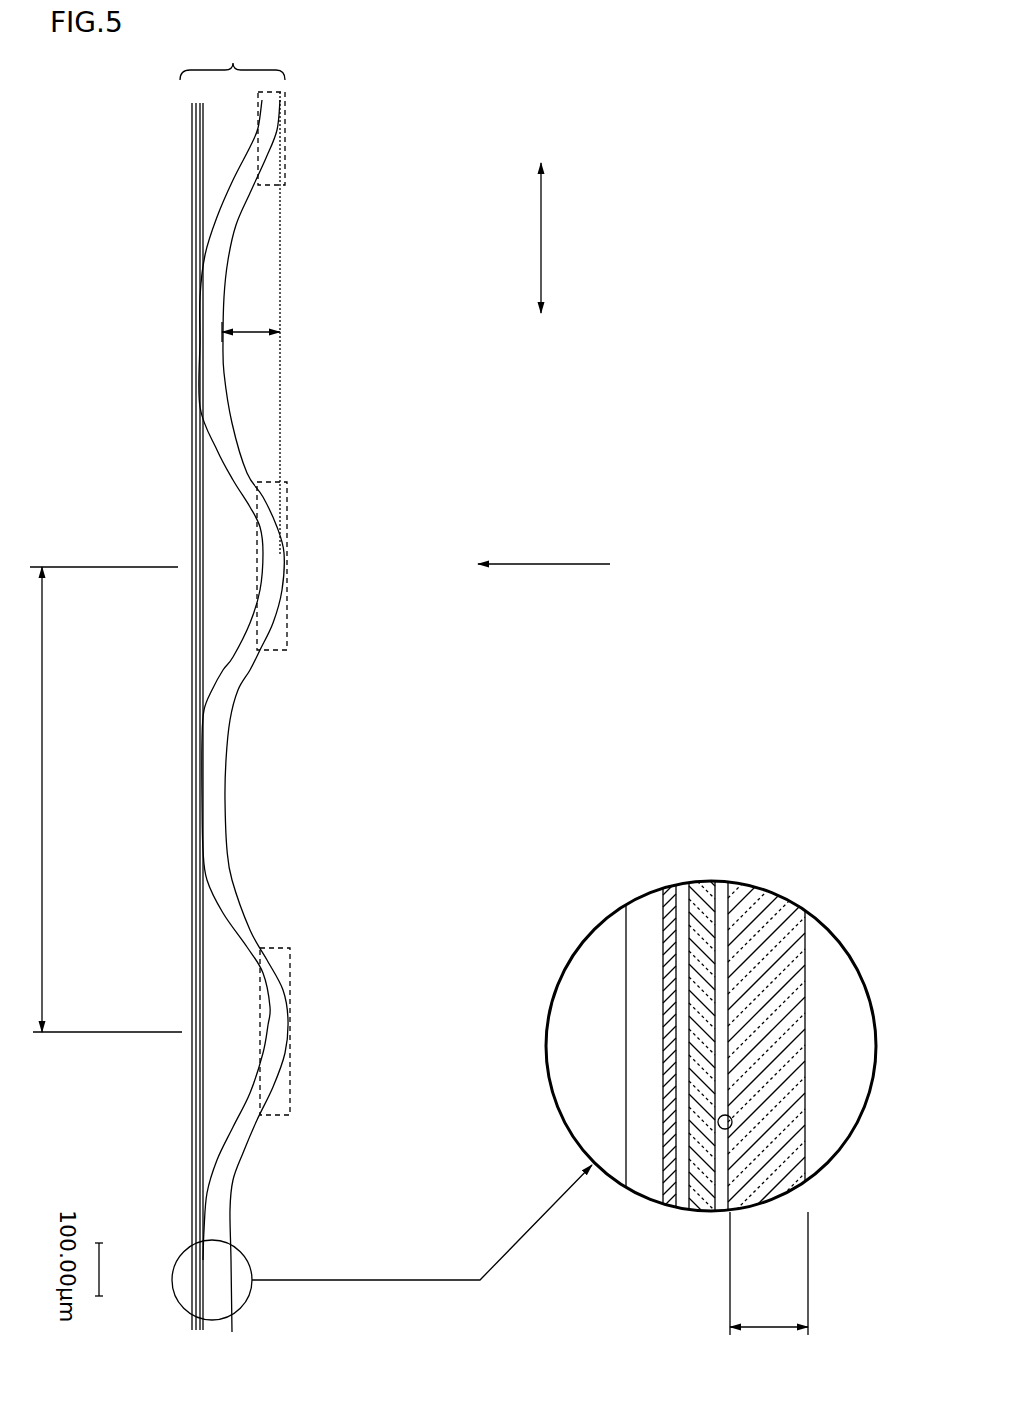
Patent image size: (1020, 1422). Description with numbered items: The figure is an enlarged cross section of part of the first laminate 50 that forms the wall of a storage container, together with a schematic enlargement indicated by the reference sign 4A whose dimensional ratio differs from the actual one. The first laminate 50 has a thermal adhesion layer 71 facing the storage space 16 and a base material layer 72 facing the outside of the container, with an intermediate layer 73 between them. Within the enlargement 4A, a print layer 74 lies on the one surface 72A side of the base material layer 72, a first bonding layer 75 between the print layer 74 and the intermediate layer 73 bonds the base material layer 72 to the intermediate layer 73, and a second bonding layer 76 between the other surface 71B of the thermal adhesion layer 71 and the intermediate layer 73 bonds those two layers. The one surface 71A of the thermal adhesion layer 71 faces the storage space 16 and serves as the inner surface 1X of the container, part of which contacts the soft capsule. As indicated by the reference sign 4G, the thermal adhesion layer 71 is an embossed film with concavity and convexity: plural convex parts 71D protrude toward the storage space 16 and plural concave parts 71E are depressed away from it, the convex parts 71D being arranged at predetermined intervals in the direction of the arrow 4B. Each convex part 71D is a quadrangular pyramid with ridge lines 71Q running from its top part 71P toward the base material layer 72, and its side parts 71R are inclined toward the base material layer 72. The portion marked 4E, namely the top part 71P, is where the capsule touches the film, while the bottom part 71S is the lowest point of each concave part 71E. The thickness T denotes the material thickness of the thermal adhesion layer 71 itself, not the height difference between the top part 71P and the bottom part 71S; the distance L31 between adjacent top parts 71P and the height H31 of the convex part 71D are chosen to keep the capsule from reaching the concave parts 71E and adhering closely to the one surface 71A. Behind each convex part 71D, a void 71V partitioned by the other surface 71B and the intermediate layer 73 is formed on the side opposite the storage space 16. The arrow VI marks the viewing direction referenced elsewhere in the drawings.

The first laminate 50 is at (232, 58).
The contact portion 4E is at (288, 110).
The convex part 71D is at (288, 124).
The top part 71P is at (289, 160).
The ridge line 71Q is at (248, 196).
The side part 71R is at (457, 679).
The concave part 71E is at (262, 283).
The bottom part 71S is at (226, 360).
The concavity and convexity 4G is at (267, 397).
The void 71V is at (222, 142).
The thermal adhesion layer 71 is at (213, 307).
The base material layer 72 is at (208, 352).
The intermediate layer 73 is at (206, 995).
The print layer 74 is at (668, 1212).
The first bonding layer 75 is at (678, 882).
The second bonding layer 76 is at (718, 882).
The enlarged schematic portion 4A is at (810, 878).
The arrangement direction arrow 4B is at (561, 238).
The storage space 16 is at (558, 427).
The view direction VI is at (544, 550).
The inner surface 1X is at (808, 978).
The one surface 71A is at (808, 1055).
The other surface 71B is at (732, 1122).
The one surface 72A is at (665, 1070).
The height of convex part H31 is at (251, 323).
The distance between top parts L31 is at (106, 799).
The thickness T is at (769, 1285).